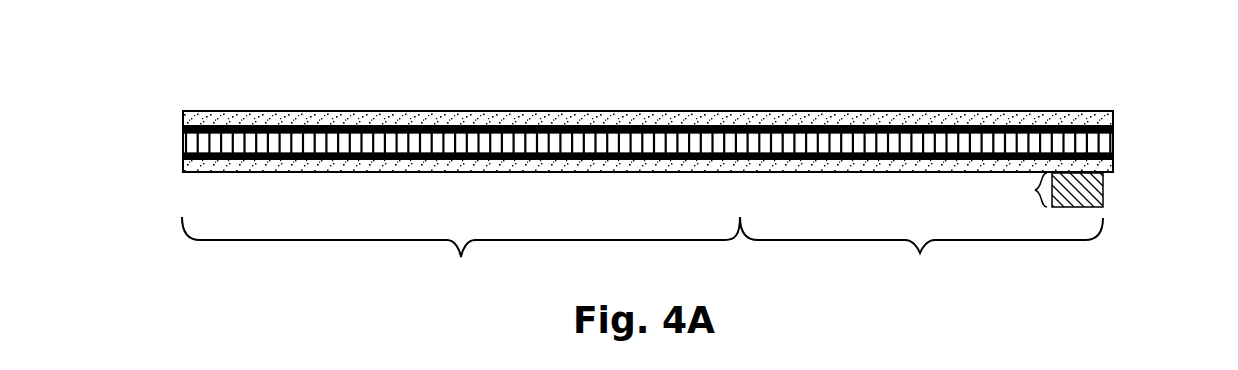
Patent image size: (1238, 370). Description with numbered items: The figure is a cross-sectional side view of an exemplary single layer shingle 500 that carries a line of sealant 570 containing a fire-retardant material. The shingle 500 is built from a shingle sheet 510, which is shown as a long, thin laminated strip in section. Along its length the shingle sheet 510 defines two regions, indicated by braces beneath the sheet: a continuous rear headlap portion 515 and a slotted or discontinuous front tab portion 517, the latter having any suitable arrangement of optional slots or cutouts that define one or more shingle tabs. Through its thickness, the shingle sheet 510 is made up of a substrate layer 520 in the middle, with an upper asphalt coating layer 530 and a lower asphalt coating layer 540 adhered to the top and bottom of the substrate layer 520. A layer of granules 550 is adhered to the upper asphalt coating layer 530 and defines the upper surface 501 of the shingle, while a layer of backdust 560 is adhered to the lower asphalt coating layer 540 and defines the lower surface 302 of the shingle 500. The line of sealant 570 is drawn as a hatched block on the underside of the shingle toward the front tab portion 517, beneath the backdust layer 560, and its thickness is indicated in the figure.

The single layer shingle 500 is at (653, 151).
The shingle sheet 510 is at (653, 123).
The upper surface 501 is at (472, 110).
The bottom surface 302 is at (468, 175).
The layer of granules 550 is at (1113, 113).
The upper asphalt coating layer 530 is at (183, 127).
The substrate layer 520 is at (1113, 140).
The lower asphalt coating layer 540 is at (183, 157).
The layer of backdust 560 is at (1113, 172).
The line of sealant 570 is at (1103, 195).
The continuous rear headlap portion 515 is at (461, 252).
The front tab portion 517 is at (921, 252).